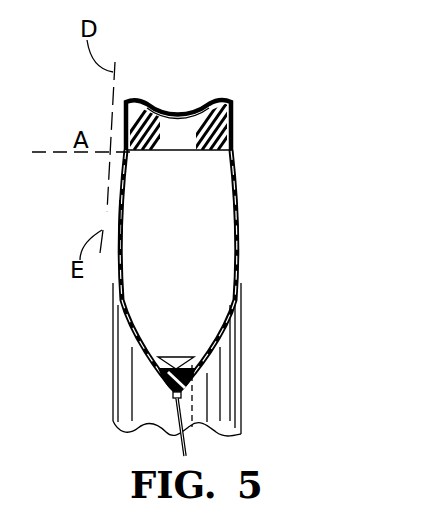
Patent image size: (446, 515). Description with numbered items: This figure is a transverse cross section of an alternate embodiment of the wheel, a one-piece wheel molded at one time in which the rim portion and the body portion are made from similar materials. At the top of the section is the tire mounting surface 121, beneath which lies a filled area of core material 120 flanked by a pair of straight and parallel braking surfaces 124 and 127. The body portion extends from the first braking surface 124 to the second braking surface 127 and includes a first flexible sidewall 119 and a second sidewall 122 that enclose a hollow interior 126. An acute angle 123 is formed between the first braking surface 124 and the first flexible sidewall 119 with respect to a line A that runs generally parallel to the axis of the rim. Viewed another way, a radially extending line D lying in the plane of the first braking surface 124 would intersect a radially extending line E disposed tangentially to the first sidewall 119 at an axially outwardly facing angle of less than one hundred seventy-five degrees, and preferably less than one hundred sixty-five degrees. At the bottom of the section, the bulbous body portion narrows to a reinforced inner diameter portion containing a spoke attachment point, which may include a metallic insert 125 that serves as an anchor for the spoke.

The first flexible sidewall 119 is at (115, 219).
The filled area of core material 120 is at (213, 107).
The tire mounting surface 121 is at (147, 106).
The second sidewall 122 is at (238, 195).
The acute angle 123 is at (86, 180).
The first braking surface 124 is at (123, 120).
The metallic insert 125 is at (190, 388).
The hollow interior 126 is at (204, 341).
The second braking surface 127 is at (229, 132).